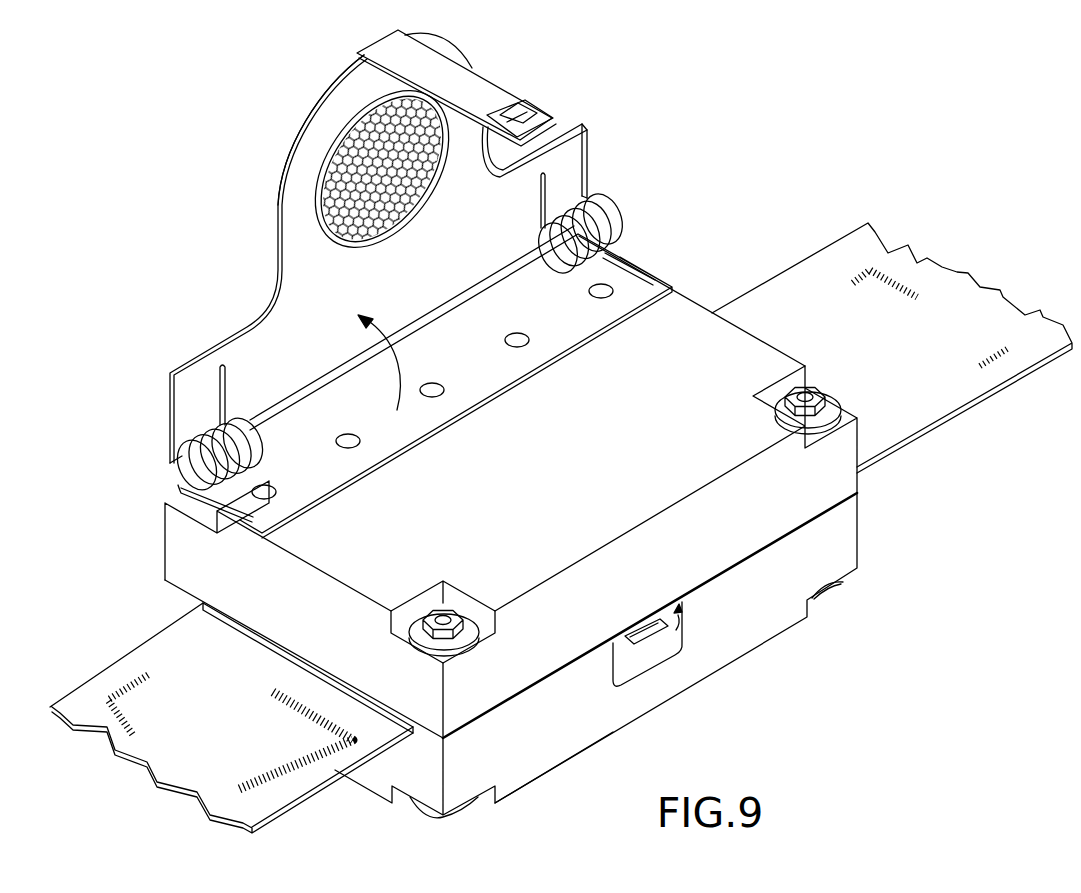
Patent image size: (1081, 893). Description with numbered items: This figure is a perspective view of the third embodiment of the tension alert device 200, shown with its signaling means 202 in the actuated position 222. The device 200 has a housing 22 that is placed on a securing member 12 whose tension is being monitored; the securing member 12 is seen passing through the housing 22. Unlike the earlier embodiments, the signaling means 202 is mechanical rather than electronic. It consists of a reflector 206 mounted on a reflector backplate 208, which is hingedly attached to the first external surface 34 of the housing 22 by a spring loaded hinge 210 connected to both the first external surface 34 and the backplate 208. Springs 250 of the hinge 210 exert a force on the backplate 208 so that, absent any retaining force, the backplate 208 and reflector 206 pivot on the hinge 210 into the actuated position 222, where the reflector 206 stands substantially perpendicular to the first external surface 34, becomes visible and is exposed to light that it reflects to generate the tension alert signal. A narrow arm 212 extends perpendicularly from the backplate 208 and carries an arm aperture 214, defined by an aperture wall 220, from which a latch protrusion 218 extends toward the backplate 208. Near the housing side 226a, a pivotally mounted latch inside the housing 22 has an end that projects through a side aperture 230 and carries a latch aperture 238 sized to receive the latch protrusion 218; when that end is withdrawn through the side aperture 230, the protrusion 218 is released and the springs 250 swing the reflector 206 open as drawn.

The securing member 12 is at (987, 297).
The housing 22 is at (850, 537).
The first external surface 34 is at (670, 459).
The tension alert device 200 is at (689, 191).
The signaling means 202 is at (287, 205).
The reflector 206 is at (397, 200).
The reflector backplate 208 is at (307, 120).
The spring loaded hinge 210 is at (390, 442).
The narrow arm 212 is at (483, 87).
The arm aperture 214 is at (483, 128).
The latch protrusion 218 is at (535, 100).
The aperture wall 220 is at (533, 103).
The actuated position 222 is at (443, 287).
The housing side 226a is at (583, 734).
The side aperture 230 is at (647, 658).
The latch aperture 238 is at (643, 630).
The springs 250 is at (620, 220).